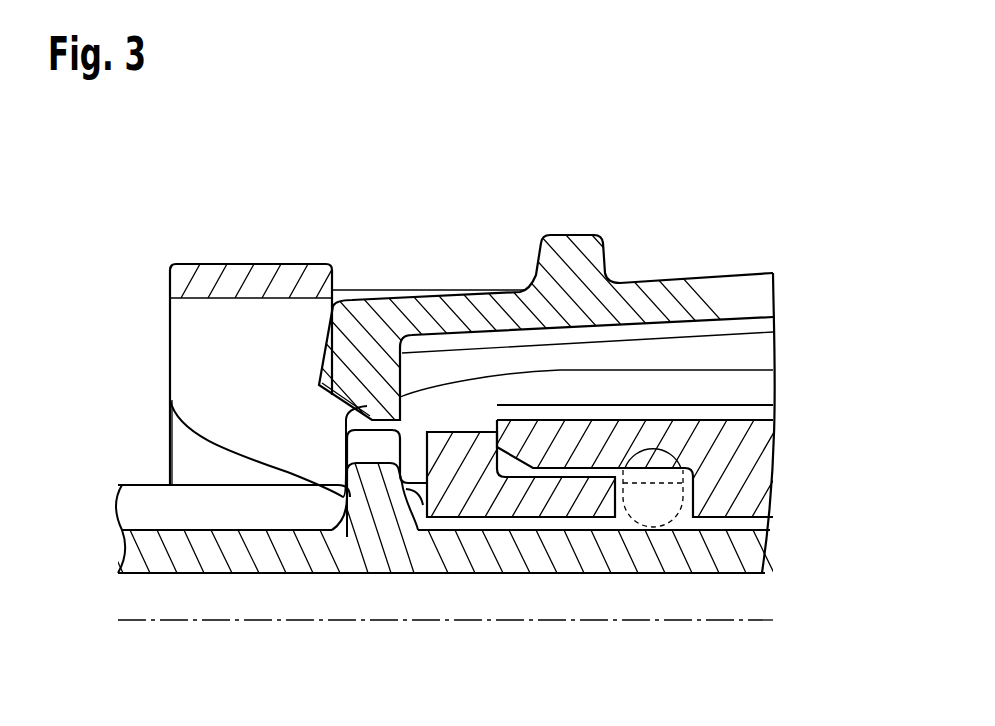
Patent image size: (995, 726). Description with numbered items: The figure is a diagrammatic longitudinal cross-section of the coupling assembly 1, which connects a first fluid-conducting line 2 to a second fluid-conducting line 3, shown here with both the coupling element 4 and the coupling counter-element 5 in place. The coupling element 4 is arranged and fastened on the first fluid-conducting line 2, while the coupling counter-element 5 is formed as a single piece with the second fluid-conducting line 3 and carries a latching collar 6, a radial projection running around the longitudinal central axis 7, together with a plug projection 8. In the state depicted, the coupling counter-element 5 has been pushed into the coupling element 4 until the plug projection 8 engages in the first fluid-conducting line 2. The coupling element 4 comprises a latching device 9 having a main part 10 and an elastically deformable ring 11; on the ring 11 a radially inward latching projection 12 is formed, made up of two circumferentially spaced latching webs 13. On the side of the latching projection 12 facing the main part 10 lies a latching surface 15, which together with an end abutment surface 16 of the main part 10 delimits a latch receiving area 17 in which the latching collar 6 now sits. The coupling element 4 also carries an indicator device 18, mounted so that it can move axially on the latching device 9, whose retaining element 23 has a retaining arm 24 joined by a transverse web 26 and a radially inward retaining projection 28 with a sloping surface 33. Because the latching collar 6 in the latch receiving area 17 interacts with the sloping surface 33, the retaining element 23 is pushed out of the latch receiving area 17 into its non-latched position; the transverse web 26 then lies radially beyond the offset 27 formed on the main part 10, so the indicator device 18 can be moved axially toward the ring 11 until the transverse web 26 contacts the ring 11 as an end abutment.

The coupling assembly 1 is at (700, 156).
The first fluid-conducting line 2 is at (718, 500).
The second fluid-conducting line 3 is at (140, 592).
The coupling element 4 is at (642, 204).
The coupling counter-element 5 is at (323, 588).
The latching collar 6 is at (381, 483).
The longitudinal central axis 7 is at (522, 625).
The plug projection 8 is at (622, 560).
The latching device 9 is at (385, 224).
The main part 10 is at (783, 260).
The elastically deformable ring 11 is at (230, 278).
The latching projection 12 is at (260, 443).
The latching web 13 is at (225, 422).
The latching surface 15 is at (365, 495).
The end abutment surface 16 is at (415, 505).
The latch receiving area 17 is at (414, 458).
The indicator device 18 is at (723, 256).
The retaining element 23 is at (606, 221).
The retaining arm 24 is at (513, 305).
The transverse web 26 is at (565, 252).
The offset 27 is at (346, 303).
The retaining projection 28 is at (366, 382).
The sloping surface 33 is at (332, 398).